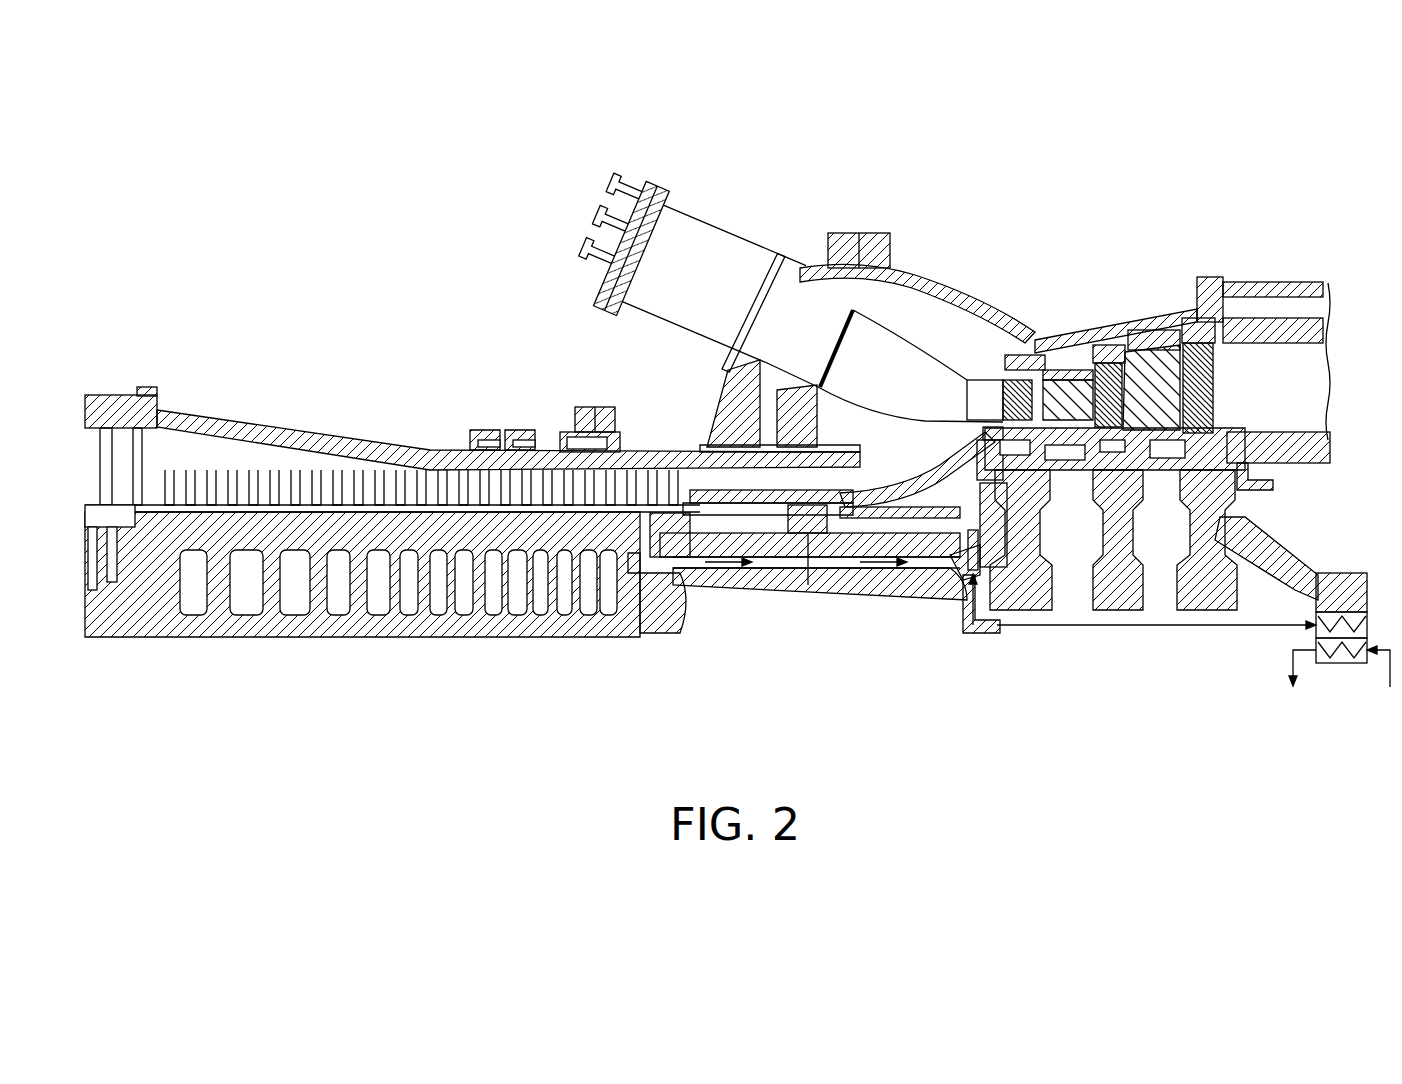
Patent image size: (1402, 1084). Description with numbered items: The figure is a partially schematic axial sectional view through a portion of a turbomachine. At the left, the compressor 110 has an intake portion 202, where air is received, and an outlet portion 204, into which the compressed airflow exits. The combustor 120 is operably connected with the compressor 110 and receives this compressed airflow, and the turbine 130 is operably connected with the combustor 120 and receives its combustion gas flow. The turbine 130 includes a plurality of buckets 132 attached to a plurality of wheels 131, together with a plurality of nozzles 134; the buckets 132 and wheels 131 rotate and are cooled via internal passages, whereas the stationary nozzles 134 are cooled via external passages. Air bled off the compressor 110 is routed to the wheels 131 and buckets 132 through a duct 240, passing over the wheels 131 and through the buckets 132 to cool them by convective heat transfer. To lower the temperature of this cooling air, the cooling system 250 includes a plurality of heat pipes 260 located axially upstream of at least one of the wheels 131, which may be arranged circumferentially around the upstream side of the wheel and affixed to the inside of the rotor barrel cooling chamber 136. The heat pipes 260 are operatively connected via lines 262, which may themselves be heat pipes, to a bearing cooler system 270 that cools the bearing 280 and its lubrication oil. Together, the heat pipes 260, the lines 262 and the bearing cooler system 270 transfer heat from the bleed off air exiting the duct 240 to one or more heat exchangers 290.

The compressor 110 is at (372, 390).
The combustor 120 is at (698, 212).
The turbine 130 is at (1205, 205).
The wheels 131 is at (1098, 612).
The buckets 132 is at (1107, 378).
The nozzles 134 is at (1070, 380).
The rotor barrel cooling chamber 136 is at (972, 528).
The intake portion 202 is at (100, 432).
The outlet portion 204 is at (922, 479).
The duct 240 is at (780, 562).
The cooling system 250 is at (986, 718).
The heat pipes 260 is at (972, 552).
The lines 262 is at (1172, 628).
The bearing cooler system 270 is at (1335, 730).
The bearing 280 is at (1341, 573).
The heat exchangers 290 is at (1342, 664).